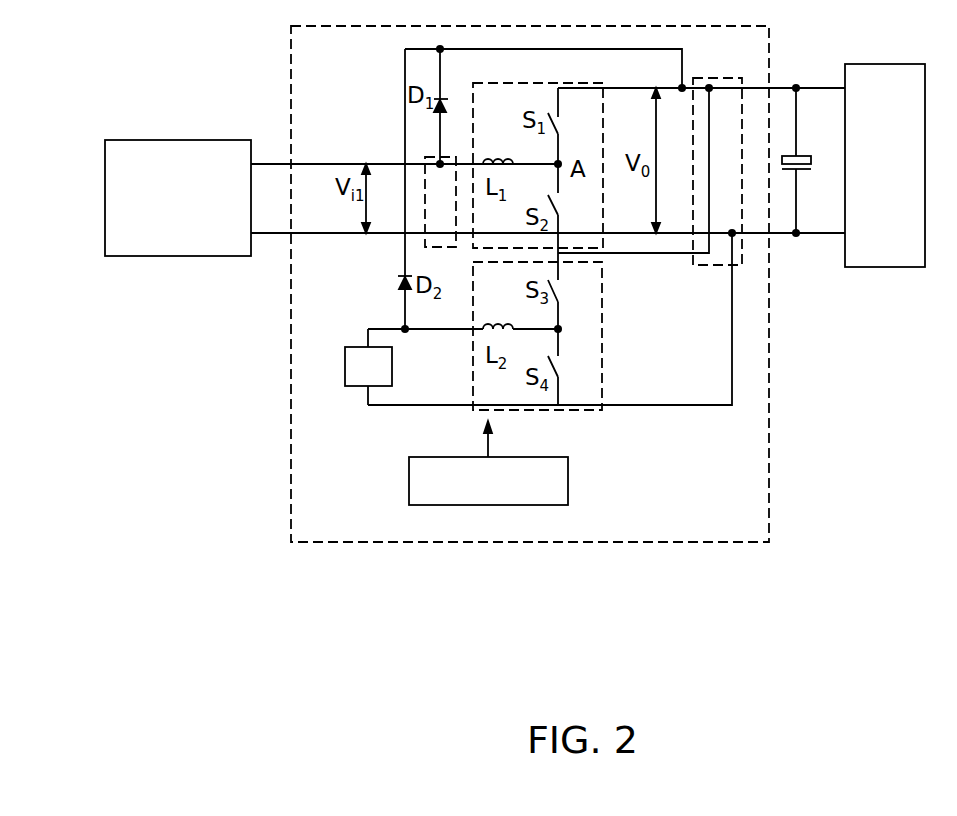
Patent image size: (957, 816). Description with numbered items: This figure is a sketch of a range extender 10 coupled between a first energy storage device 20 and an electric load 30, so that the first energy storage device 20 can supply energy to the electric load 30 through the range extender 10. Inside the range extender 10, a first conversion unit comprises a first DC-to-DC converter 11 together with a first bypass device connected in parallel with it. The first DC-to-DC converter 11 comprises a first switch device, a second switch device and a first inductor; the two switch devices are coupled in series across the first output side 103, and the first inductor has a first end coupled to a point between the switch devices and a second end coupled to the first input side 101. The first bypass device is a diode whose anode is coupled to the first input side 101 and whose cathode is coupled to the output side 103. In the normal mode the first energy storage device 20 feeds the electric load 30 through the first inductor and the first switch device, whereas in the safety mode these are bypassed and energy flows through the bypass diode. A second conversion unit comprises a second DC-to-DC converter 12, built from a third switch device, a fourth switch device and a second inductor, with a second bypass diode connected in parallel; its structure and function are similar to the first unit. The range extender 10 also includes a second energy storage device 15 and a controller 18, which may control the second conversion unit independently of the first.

The range extender 10 is at (291, 40).
The first energy storage device 20 is at (178, 140).
The electric load 30 is at (905, 64).
The first DC-to-DC converter 11 is at (517, 83).
The second DC-to-DC converter 12 is at (603, 300).
The first input side 101 is at (435, 155).
The first output side 103 is at (700, 78).
The second energy storage device 15 is at (363, 347).
The controller 18 is at (529, 457).